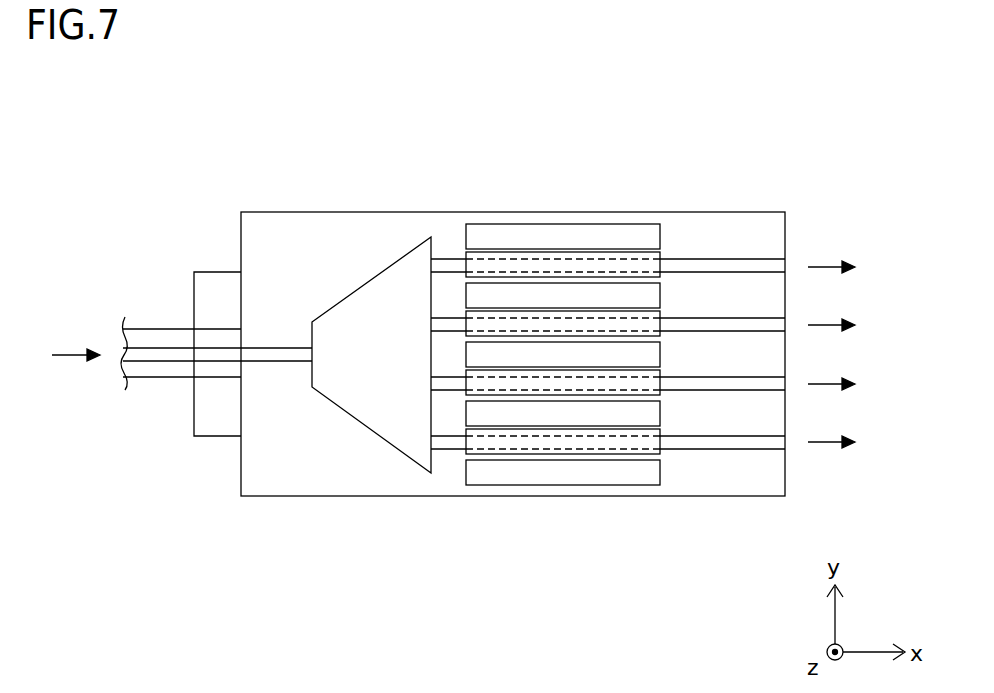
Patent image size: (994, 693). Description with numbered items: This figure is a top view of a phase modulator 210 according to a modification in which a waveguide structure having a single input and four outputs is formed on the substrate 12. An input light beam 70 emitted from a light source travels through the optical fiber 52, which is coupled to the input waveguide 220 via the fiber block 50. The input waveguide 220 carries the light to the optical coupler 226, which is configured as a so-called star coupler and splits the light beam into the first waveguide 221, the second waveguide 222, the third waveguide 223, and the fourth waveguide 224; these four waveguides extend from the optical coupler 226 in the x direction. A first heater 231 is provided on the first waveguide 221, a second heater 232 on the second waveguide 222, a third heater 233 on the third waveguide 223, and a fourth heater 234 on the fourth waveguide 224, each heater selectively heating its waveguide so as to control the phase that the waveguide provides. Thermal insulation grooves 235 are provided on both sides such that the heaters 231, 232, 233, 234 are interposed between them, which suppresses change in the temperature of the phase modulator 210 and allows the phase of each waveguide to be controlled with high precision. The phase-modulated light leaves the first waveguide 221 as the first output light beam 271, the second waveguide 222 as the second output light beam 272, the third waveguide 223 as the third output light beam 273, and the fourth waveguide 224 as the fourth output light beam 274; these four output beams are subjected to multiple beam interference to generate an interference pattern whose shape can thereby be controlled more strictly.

The substrate 12 is at (292, 212).
The fiber block 50 is at (215, 272).
The optical fiber 52 is at (155, 335).
The input light beam 70 is at (68, 345).
The phase modulator 210 is at (693, 153).
The input waveguide 220 is at (278, 352).
The optical coupler 226 is at (340, 291).
The thermal insulation grooves 235 is at (475, 473).
The first heater 231 is at (661, 263).
The second heater 232 is at (661, 322).
The third heater 233 is at (661, 381).
The fourth heater 234 is at (661, 440).
The first waveguide 221 is at (757, 266).
The second waveguide 222 is at (757, 325).
The third waveguide 223 is at (757, 384).
The fourth waveguide 224 is at (757, 443).
The first output light beam 271 is at (826, 264).
The second output light beam 272 is at (826, 322).
The third output light beam 273 is at (826, 381).
The fourth output light beam 274 is at (826, 439).